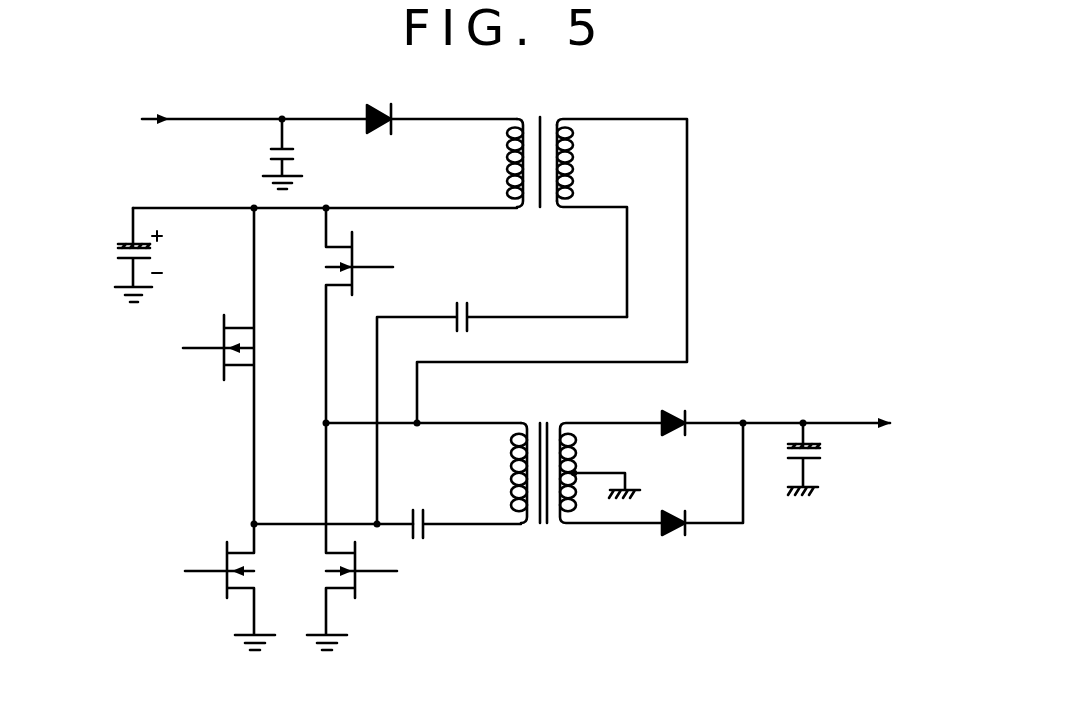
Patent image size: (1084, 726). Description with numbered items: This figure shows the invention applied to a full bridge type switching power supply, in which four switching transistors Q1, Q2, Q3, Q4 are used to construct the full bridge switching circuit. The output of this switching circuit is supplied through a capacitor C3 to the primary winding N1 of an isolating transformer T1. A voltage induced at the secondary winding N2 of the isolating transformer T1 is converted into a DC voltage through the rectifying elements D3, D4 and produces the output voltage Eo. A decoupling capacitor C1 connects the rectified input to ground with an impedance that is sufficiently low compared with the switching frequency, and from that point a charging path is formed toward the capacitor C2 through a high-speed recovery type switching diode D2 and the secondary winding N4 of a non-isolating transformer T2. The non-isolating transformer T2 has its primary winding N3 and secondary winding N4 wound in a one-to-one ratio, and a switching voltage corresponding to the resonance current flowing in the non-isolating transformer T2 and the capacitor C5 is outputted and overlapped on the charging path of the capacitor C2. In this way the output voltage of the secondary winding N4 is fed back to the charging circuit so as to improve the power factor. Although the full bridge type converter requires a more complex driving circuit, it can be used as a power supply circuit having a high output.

The high-speed recovery type switching diode D2 is at (442, 103).
The decoupling capacitor C1 is at (299, 154).
The capacitor C2 is at (123, 255).
The non-isolating transformer T2 is at (544, 146).
The secondary winding N4 is at (495, 163).
The primary winding N3 is at (552, 271).
The switching transistor Q3 is at (379, 366).
The capacitor C5 is at (502, 399).
The switching transistor Q1 is at (238, 366).
The capacitor C3 is at (464, 509).
The switching transistor Q2 is at (241, 587).
The switching transistor Q4 is at (372, 587).
The isolating transformer T1 is at (543, 456).
The primary winding N1 is at (499, 473).
The secondary winding N2 is at (611, 473).
The rectifying element D3 is at (701, 407).
The rectifying element D4 is at (702, 498).
The output voltage Eo is at (833, 451).